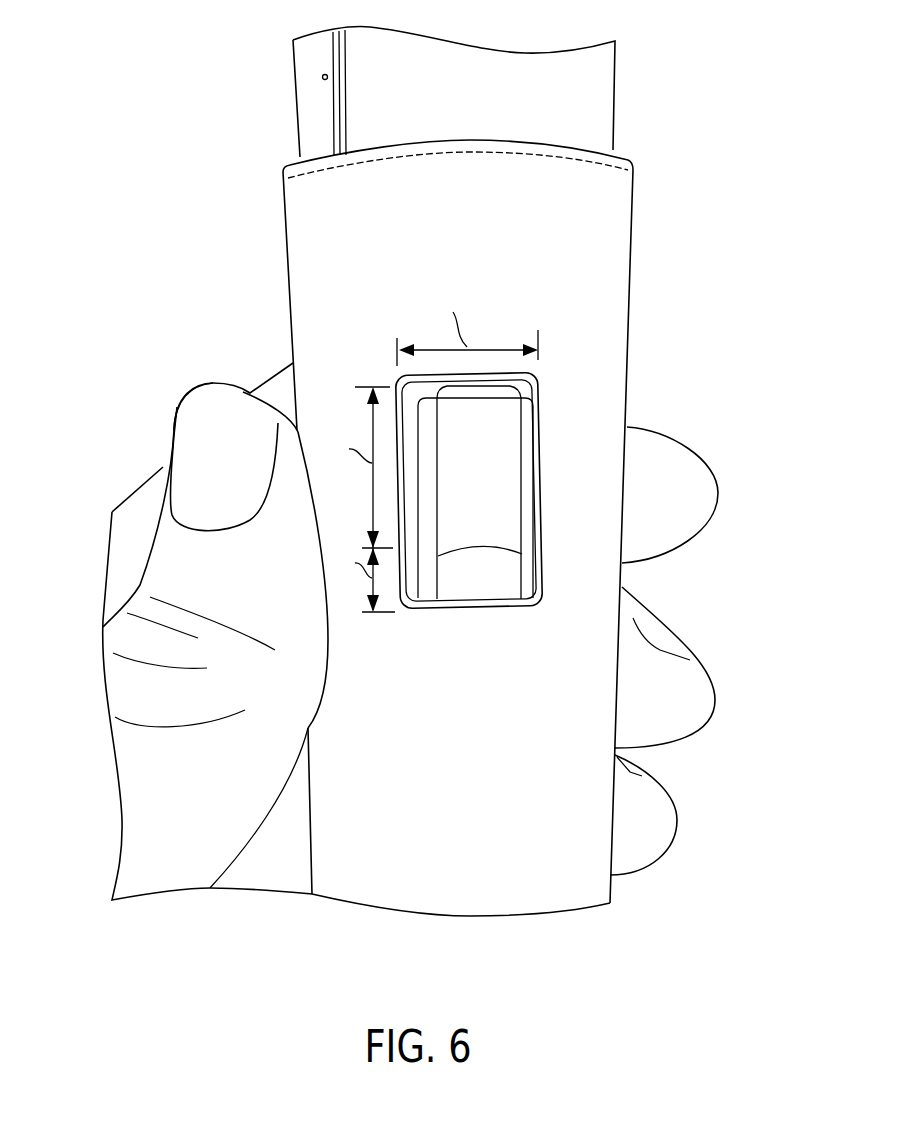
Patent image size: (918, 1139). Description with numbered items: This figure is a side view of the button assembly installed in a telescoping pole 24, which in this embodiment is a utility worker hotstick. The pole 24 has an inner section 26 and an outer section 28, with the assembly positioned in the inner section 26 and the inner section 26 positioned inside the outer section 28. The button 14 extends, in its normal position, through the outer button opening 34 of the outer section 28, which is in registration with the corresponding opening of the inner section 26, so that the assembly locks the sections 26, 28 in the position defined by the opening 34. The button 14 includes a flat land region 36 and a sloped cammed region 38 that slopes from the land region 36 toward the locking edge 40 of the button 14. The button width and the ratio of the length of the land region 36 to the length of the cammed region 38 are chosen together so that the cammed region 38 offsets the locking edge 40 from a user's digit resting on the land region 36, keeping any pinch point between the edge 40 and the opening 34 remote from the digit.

The button 14 is at (446, 471).
The pole 24 is at (278, 302).
The inner section 26 is at (336, 98).
The outer section 28 is at (348, 817).
The outer button opening 34 is at (540, 380).
The land region 36 is at (510, 480).
The cammed region 38 is at (492, 585).
The locking edge 40 is at (428, 612).